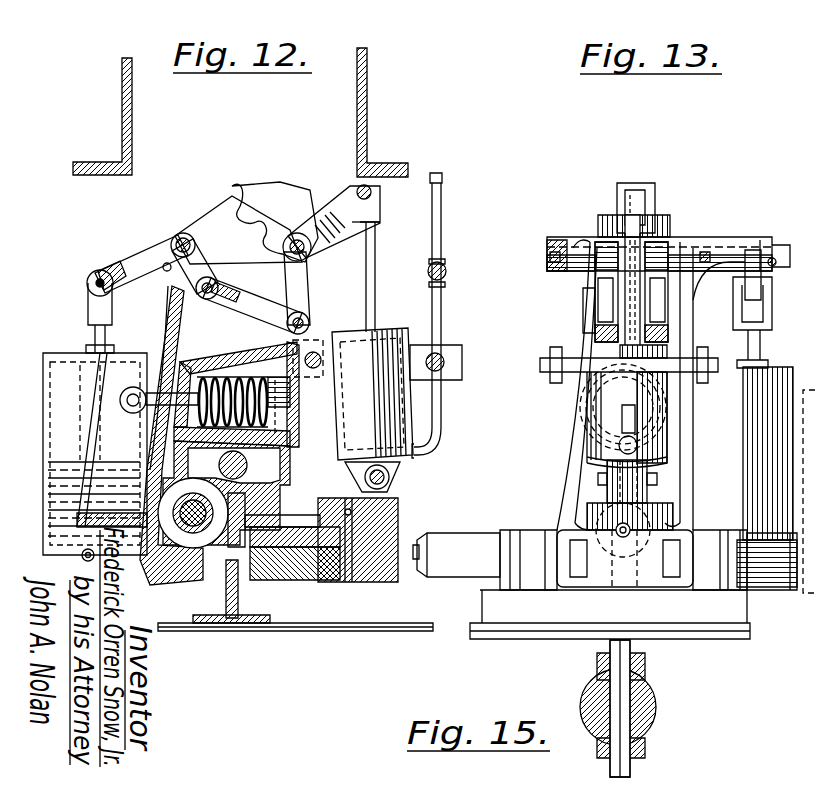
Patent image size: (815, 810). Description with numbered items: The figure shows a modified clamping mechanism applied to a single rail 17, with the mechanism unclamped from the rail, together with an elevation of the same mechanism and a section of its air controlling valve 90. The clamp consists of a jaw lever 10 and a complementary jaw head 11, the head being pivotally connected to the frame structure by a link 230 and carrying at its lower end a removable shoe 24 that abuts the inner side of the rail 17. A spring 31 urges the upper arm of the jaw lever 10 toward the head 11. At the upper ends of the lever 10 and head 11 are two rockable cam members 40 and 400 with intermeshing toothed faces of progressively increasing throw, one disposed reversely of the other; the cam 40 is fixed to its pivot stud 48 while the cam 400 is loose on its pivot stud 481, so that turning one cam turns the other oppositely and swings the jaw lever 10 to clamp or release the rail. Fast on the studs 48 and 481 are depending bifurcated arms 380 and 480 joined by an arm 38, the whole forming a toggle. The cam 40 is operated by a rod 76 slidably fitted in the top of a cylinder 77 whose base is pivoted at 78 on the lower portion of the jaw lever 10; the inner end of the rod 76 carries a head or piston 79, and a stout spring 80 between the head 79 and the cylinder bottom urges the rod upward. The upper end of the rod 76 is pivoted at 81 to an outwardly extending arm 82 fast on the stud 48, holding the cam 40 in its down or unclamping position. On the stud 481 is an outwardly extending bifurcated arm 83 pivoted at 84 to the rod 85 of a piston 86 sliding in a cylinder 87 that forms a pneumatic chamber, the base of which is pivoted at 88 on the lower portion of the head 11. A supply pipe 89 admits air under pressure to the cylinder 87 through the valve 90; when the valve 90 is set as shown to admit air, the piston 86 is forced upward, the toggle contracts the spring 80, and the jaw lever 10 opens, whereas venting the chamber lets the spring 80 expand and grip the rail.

In FIG. 12, the jaw lever 10 is at (162, 598).
In FIG. 12, the jaw head 11 is at (244, 444).
In FIG. 13, the jaw head 11 is at (575, 408).
In FIG. 12, the rail 17 is at (238, 628).
In FIG. 13, the rail 17 is at (527, 630).
In FIG. 12, the shoe 24 is at (262, 566).
In FIG. 12, the spring 31 is at (228, 366).
In FIG. 13, the spring 31 is at (585, 396).
In FIG. 12, the arm 38 is at (249, 306).
In FIG. 13, the arm 38 is at (598, 318).
In FIG. 12, the cam member 40 is at (204, 222).
In FIG. 13, the cam member 40 is at (590, 268).
In FIG. 12, the pivot stud 48 is at (180, 266).
In FIG. 13, the pivot stud 48 is at (775, 260).
In FIG. 12, the rod 76 is at (90, 333).
In FIG. 13, the rod 76 is at (762, 350).
In FIG. 12, the cylinder 77 is at (60, 358).
In FIG. 13, the cylinder 77 is at (803, 600).
In FIG. 12, the pivotal support 78 is at (82, 555).
In FIG. 12, the head or piston 79 is at (70, 470).
In FIG. 12, the spring 80 is at (112, 478).
In FIG. 13, the spring 80 is at (808, 625).
In FIG. 12, the pivotal connection 81 is at (88, 274).
In FIG. 13, the pivotal connection 81 is at (773, 296).
In FIG. 12, the arm 82 is at (120, 266).
In FIG. 13, the arm 82 is at (753, 250).
In FIG. 12, the bifurcated arm 83 is at (330, 206).
In FIG. 13, the bifurcated arm 83 is at (638, 205).
In FIG. 12, the pivotal connection 84 is at (368, 188).
In FIG. 13, the pivotal connection 84 is at (656, 192).
In FIG. 12, the rod 85 is at (377, 305).
In FIG. 13, the rod 85 is at (642, 320).
In FIG. 12, the piston 86 is at (443, 340).
In FIG. 12, the cylinder 87 is at (398, 412).
In FIG. 13, the cylinder 87 is at (596, 441).
In FIG. 12, the pivot 88 is at (390, 479).
In FIG. 13, the pivot 88 is at (650, 486).
In FIG. 12, the supply pipe 89 is at (441, 182).
In FIG. 15, the supply pipe 89 is at (633, 772).
In FIG. 12, the valve 90 is at (447, 272).
In FIG. 15, the valve 90 is at (660, 698).
In FIG. 12, the link 230 is at (463, 366).
In FIG. 12, the bifurcated arm 380 is at (165, 266).
In FIG. 13, the bifurcated arm 380 is at (595, 300).
In FIG. 12, the cam member 400 is at (258, 204).
In FIG. 13, the cam member 400 is at (637, 184).
In FIG. 12, the bifurcated arm 480 is at (308, 278).
In FIG. 13, the bifurcated arm 480 is at (596, 330).
In FIG. 12, the pivot stud 481 is at (305, 247).
In FIG. 13, the pivot stud 481 is at (550, 250).